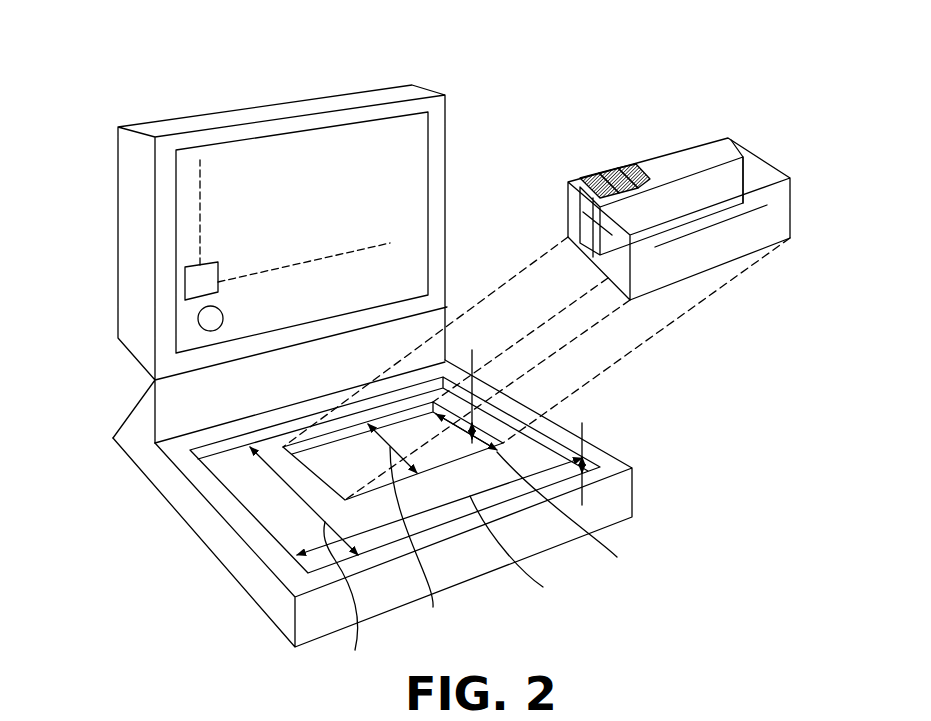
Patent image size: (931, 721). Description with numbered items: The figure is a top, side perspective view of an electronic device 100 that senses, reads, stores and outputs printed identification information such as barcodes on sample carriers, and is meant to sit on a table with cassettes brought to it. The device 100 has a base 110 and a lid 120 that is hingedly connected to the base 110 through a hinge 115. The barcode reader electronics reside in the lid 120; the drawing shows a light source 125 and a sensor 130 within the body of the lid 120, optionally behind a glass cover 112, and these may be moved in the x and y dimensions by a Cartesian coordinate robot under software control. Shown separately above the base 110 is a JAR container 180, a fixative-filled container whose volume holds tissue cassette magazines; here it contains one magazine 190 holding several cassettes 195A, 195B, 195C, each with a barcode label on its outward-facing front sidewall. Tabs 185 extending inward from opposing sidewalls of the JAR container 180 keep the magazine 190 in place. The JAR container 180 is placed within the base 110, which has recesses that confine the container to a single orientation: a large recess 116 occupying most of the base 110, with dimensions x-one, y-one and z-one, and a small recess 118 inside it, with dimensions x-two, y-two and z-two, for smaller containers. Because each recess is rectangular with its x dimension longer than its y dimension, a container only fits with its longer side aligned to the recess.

The electronic device 100 is at (330, 71).
The base 110 is at (150, 483).
The glass cover 112 is at (152, 443).
The hinge 115 is at (185, 340).
The recess 116 is at (262, 480).
The small recess 118 is at (358, 462).
The lid 120 is at (118, 220).
The light source 125 is at (198, 282).
The sensor 130 is at (198, 319).
The JAR container 180 is at (783, 170).
The tabs 185 is at (750, 167).
The magazine 190 is at (743, 160).
The cassette 195A is at (590, 173).
The cassette 195B is at (612, 170).
The cassette 195C is at (637, 164).